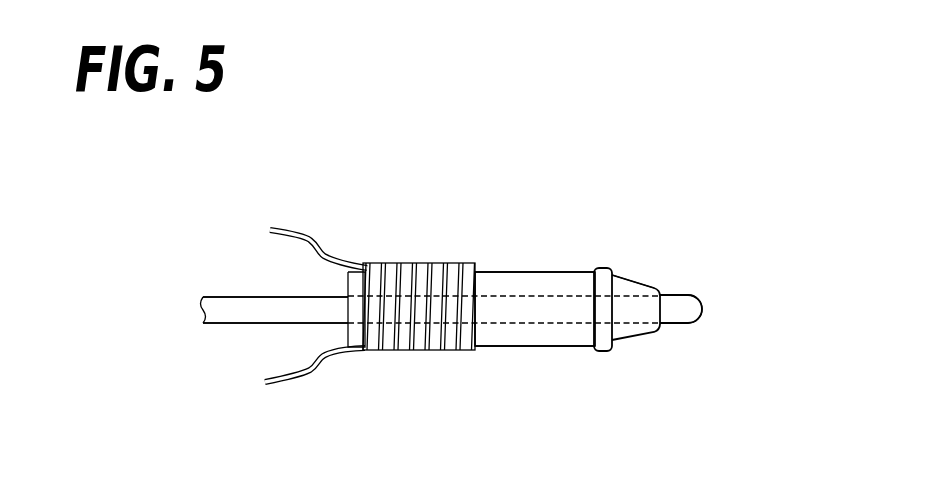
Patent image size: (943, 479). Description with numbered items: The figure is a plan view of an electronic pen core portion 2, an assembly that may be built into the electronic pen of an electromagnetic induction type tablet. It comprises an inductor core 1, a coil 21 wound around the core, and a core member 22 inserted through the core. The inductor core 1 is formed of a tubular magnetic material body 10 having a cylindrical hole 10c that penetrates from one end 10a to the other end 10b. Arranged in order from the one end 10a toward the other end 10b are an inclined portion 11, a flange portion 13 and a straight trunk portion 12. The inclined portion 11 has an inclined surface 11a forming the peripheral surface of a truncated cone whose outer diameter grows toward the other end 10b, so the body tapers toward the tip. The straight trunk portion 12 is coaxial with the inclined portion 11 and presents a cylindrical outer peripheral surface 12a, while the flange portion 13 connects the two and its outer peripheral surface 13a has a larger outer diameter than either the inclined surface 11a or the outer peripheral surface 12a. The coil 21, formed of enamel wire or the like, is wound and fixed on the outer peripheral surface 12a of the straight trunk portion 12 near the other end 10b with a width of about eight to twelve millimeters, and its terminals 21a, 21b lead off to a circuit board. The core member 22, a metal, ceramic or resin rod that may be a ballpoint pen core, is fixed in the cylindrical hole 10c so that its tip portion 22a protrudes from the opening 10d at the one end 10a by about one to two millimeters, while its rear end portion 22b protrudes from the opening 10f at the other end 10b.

The inductor core 1 is at (555, 347).
The electronic pen core portion 2 is at (698, 150).
The magnetic material body 10 is at (545, 272).
The one end 10a is at (680, 294).
The other end 10b is at (347, 290).
The cylindrical hole 10c is at (540, 318).
The opening 10d is at (663, 326).
The opening 10f is at (347, 325).
The inclined portion 11 is at (640, 333).
The inclined surface 11a is at (637, 278).
The straight trunk portion 12 is at (473, 350).
The outer peripheral surface 12a is at (495, 272).
The flange portion 13 is at (600, 351).
The outer peripheral surface 13a is at (602, 268).
The coil 21 is at (422, 263).
The terminal 21a is at (313, 238).
The terminal 21b is at (303, 378).
The core member 22 is at (262, 315).
The tip portion 22a is at (695, 322).
The rear end portion 22b is at (238, 293).